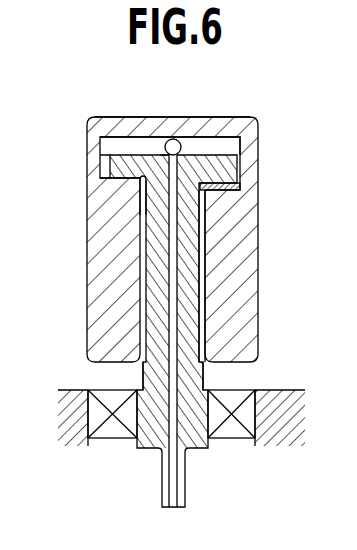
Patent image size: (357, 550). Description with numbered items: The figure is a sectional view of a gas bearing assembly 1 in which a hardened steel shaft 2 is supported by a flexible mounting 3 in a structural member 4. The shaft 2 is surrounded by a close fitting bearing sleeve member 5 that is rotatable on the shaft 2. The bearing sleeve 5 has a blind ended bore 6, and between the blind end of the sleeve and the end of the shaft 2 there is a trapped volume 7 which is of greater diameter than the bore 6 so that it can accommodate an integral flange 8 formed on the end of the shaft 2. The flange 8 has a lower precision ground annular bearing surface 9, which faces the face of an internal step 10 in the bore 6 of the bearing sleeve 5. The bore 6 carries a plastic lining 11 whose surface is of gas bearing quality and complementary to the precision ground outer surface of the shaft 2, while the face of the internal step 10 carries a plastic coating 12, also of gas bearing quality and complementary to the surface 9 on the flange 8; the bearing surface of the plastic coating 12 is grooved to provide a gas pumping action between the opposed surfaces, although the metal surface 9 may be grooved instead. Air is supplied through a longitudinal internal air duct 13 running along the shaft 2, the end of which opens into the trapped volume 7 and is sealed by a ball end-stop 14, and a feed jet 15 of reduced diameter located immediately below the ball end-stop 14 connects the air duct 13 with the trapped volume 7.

The bearing assembly 1 is at (169, 116).
The hardened steel shaft 2 is at (187, 243).
The flexible mounting 3 is at (235, 372).
The structural member 4 is at (84, 416).
The bearing sleeve member 5 is at (235, 307).
The bore 6 is at (205, 220).
The trapped volume 7 is at (232, 140).
The integral flange 8 is at (108, 167).
The annular bearing surface 9 is at (112, 195).
The internal step 10 is at (128, 192).
The plastic lining 11 is at (203, 270).
The plastic coating 12 is at (222, 184).
The longitudinal internal air duct 13 is at (173, 364).
The ball end-stop 14 is at (180, 143).
The feed jet 15 is at (165, 158).